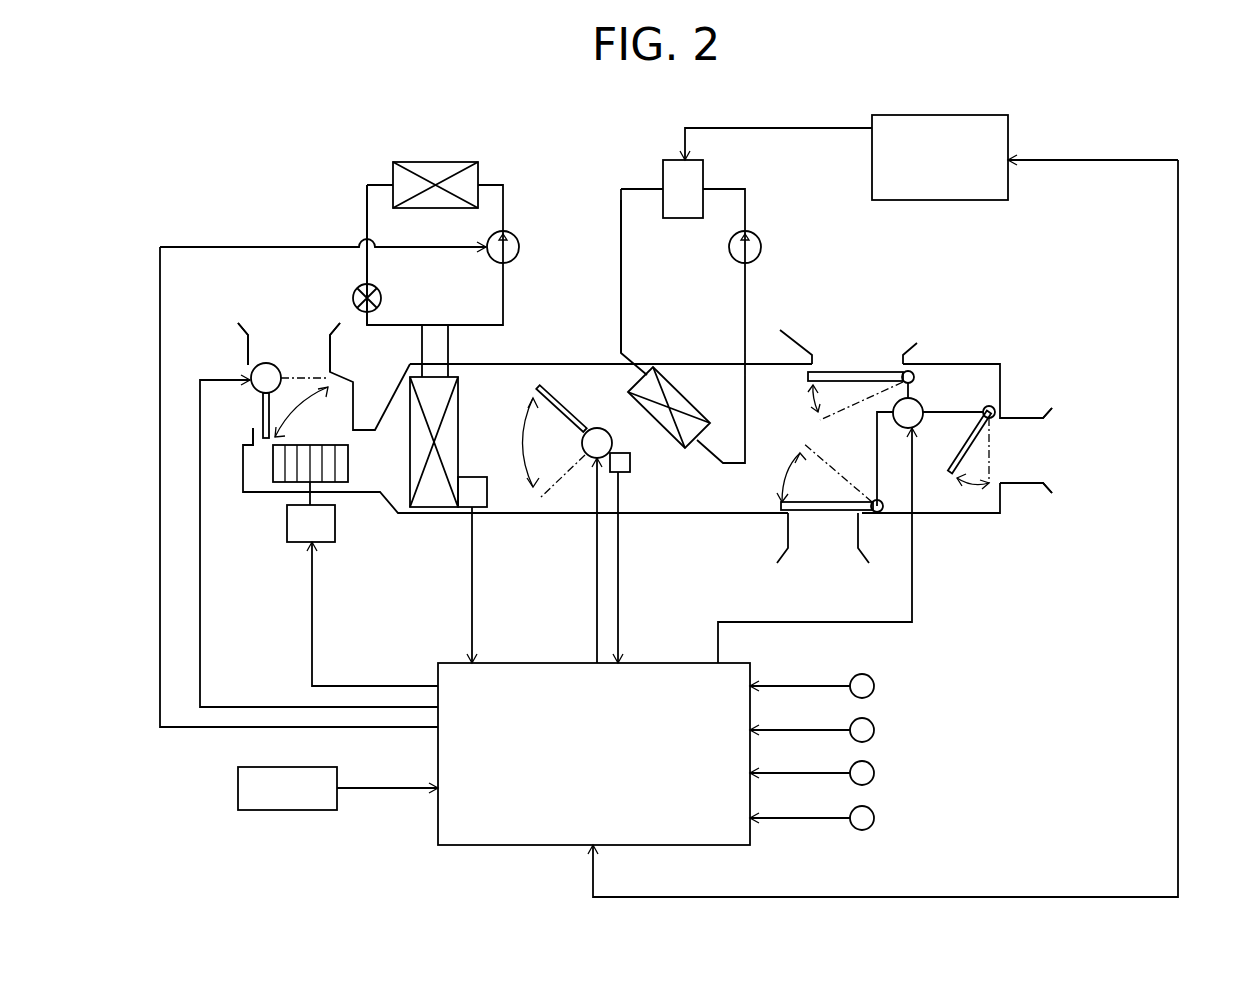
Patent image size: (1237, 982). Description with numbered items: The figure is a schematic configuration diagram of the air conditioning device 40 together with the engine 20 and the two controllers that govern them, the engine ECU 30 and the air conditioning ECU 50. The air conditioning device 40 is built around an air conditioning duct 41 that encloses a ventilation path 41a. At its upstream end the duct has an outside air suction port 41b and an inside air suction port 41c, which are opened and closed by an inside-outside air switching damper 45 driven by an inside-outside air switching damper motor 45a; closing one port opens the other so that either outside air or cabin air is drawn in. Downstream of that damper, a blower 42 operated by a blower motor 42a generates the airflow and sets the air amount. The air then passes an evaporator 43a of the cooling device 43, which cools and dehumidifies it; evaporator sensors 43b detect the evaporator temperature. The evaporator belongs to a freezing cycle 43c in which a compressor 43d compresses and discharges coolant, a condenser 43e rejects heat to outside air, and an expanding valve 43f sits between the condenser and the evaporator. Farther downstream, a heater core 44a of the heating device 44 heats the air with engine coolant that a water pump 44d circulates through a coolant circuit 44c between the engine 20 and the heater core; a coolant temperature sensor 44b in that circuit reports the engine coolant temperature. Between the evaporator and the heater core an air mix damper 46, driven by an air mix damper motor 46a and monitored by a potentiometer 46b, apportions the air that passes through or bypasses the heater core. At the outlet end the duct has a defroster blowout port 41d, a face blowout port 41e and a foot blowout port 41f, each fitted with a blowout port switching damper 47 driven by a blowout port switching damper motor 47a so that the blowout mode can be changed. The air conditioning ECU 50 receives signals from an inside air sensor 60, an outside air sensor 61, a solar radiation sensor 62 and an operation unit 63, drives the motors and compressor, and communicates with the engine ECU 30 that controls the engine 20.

The engine 20 is at (697, 170).
The engine electronic control unit (ECU) 30 is at (947, 125).
The air conditioning device 40 is at (695, 518).
The air conditioning duct 41 is at (568, 518).
The ventilation path 41a is at (507, 514).
The outside air suction port 41b is at (275, 330).
The inside air suction port 41c is at (255, 403).
The defroster blowout port 41d is at (917, 333).
The face blowout port 41e is at (1043, 435).
The foot blowout port 41f is at (873, 563).
The blower 42 is at (349, 463).
The blower motor 42a is at (332, 527).
The cooling device 43 is at (510, 200).
The evaporator 43a is at (455, 425).
The evaporator sensor 43b is at (470, 476).
The freezing cycle 43c is at (365, 217).
The compressor 43d is at (512, 258).
The condenser 43e is at (440, 170).
The expanding valve 43f is at (383, 293).
The heating device 44 is at (750, 200).
The heater core 44a is at (707, 395).
The coolant temperature sensor 44b is at (875, 770).
The coolant circuit 44c is at (624, 249).
The water pump 44d is at (751, 260).
The inside-outside air switching damper 45 is at (272, 412).
The inside-outside air switching damper motor 45a is at (268, 368).
The air mix damper 46 is at (555, 400).
The air mix damper motor 46a is at (580, 443).
The potentiometer 46b is at (655, 470).
The blowout port switching damper 47 is at (843, 373).
The blowout port switching damper motor 47a is at (918, 396).
The air conditioning ECU 50 is at (650, 668).
The inside air sensor 60 is at (875, 683).
The outside air sensor 61 is at (875, 727).
The solar radiation sensor 62 is at (875, 815).
The operation unit 63 is at (288, 805).